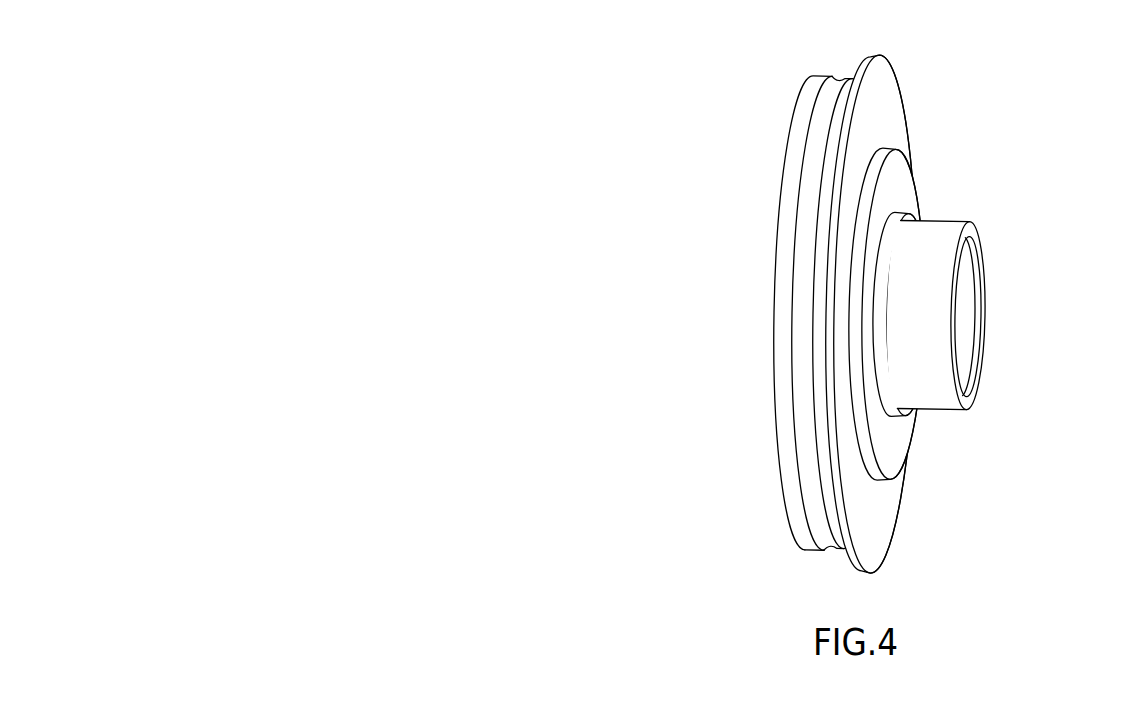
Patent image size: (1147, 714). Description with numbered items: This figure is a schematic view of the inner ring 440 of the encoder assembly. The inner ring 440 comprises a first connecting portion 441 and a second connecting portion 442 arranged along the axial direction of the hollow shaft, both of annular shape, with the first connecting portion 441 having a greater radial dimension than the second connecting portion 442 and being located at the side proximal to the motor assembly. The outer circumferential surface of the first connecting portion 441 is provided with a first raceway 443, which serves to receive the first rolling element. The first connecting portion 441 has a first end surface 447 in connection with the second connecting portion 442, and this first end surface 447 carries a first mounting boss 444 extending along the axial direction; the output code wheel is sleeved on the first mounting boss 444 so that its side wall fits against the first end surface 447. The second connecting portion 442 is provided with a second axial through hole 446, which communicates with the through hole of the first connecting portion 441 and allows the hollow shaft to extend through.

The inner ring 440 is at (686, 289).
The first connecting portion 441 is at (780, 207).
The second connecting portion 442 is at (947, 240).
The first raceway 443 is at (817, 119).
The first mounting boss 444 is at (890, 172).
The second axial through hole 446 is at (972, 325).
The first end surface 447 is at (883, 97).